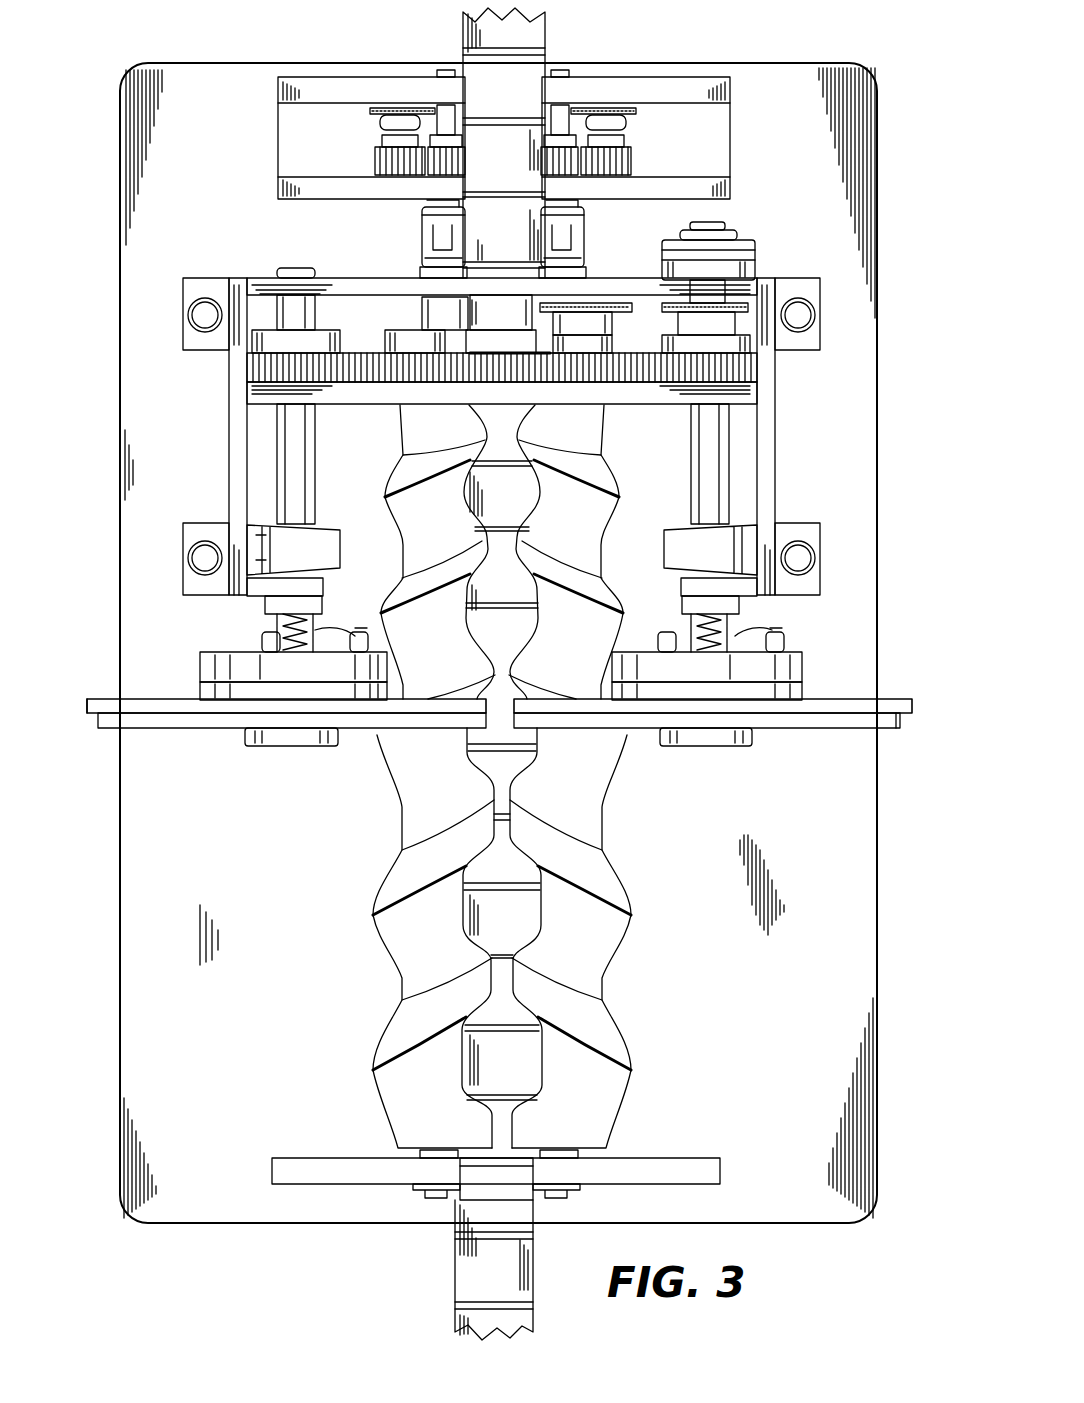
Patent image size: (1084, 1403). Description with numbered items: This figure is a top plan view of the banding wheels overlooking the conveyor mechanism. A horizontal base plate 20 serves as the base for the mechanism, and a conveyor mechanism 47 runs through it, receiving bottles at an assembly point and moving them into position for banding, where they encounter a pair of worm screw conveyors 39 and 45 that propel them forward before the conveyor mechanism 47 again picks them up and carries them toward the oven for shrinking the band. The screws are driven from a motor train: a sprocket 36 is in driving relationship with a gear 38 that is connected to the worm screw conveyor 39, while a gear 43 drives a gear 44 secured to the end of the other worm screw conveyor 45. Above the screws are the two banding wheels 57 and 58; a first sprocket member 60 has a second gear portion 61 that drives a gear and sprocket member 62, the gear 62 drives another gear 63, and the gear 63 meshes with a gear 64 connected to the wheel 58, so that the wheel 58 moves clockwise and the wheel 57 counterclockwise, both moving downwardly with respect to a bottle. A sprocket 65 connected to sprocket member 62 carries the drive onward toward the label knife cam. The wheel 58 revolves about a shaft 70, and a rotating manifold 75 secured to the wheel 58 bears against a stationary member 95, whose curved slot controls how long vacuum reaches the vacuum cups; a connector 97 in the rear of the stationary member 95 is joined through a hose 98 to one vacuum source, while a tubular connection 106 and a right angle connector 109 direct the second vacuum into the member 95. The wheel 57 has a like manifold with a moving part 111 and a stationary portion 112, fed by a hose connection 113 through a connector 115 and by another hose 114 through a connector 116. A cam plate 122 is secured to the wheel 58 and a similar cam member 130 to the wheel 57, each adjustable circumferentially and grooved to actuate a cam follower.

The base plate 20 is at (766, 1040).
The conveyor mechanism 47 is at (533, 35).
The sprocket 36 is at (372, 152).
The gear 38 is at (464, 156).
The gear 43 is at (630, 152).
The gear 44 is at (547, 158).
The first sprocket member 60 is at (770, 300).
The second gear portion 61 is at (757, 370).
The gear and sprocket member 62 is at (597, 372).
The gear 63 is at (375, 345).
The gear 64 is at (247, 367).
The sprocket 65 is at (614, 300).
The shaft 70 is at (318, 465).
The tubular connection 106 is at (318, 650).
The hose connection 113 is at (735, 640).
The right angle connector 109 is at (262, 640).
The connector 97 is at (405, 648).
The hose 98 is at (388, 636).
The connector 115 is at (660, 646).
The connector 116 is at (792, 642).
The hose 114 is at (790, 635).
The stationary member 95 is at (200, 660).
The manifold 75 is at (200, 690).
The stationary portion 112 is at (802, 668).
The moving part 111 is at (802, 694).
The wheel 57 is at (915, 692).
The wheel 58 is at (100, 666).
The cam plate 122 is at (99, 730).
The cam member 130 is at (895, 728).
The worm screw conveyor 39 is at (388, 918).
The worm screw conveyor 45 is at (598, 918).